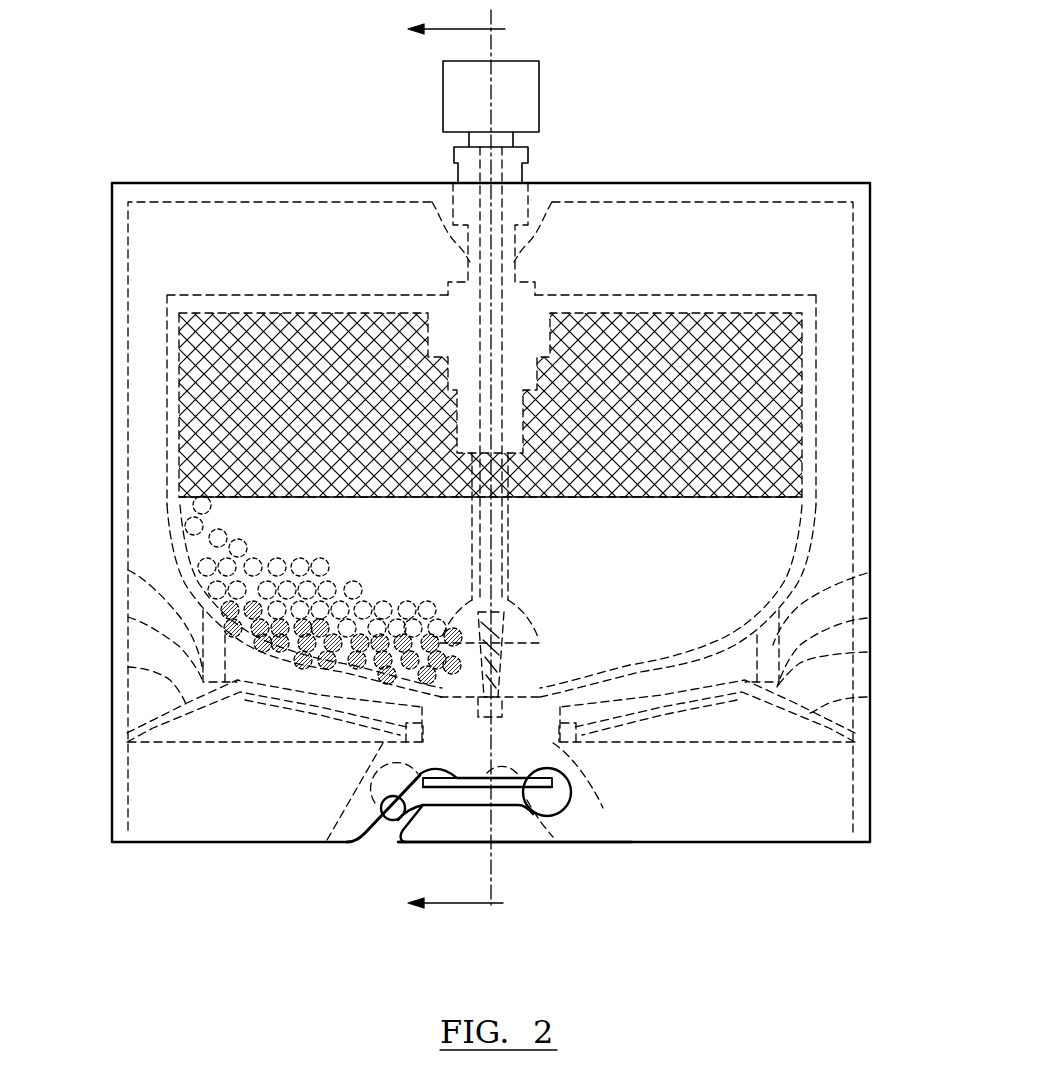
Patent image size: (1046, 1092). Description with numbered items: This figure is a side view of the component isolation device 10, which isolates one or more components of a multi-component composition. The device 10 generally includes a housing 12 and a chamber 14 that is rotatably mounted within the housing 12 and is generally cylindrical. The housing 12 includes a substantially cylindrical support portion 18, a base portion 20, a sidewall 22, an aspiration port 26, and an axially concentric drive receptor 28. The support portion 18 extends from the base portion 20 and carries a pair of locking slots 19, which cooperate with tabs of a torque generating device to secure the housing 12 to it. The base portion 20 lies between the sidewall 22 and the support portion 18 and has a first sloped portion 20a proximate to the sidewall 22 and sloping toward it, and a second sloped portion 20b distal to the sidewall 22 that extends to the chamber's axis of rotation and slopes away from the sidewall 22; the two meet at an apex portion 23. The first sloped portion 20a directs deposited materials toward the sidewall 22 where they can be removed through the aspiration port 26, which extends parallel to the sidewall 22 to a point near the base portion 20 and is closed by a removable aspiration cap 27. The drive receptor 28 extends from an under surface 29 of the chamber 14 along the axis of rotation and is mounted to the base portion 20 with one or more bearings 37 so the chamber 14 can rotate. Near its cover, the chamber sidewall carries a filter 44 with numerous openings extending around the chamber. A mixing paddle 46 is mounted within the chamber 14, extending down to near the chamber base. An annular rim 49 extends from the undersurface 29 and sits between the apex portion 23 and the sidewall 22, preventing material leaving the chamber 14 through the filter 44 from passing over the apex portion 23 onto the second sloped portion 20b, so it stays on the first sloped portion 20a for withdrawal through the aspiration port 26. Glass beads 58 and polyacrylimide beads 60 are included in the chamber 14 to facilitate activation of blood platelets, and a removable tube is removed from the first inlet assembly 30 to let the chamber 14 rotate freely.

The component isolation device 10 is at (718, 98).
The housing 12 is at (869, 507).
The chamber 14 is at (830, 331).
The cylindrical support portion 18 is at (860, 797).
The locking slots 19 is at (398, 820).
The base portion 20 is at (867, 652).
The first sloped portion 20a is at (128, 667).
The second sloped portion 20b is at (335, 700).
The sidewall 22 is at (848, 432).
The apex portion 23 is at (128, 617).
The aspiration port 26 is at (477, 318).
The removable aspiration cap 27 is at (530, 153).
The drive receptor 28 is at (603, 808).
The under surface 29 is at (597, 697).
The first inlet assembly 30 is at (548, 102).
The bearings 37 is at (338, 838).
The filter 44 is at (780, 413).
The mixing paddle 46 is at (520, 535).
The annular rim 49 is at (128, 570).
The glass beads 58 is at (288, 573).
The polyacrylimide beads 60 is at (400, 632).